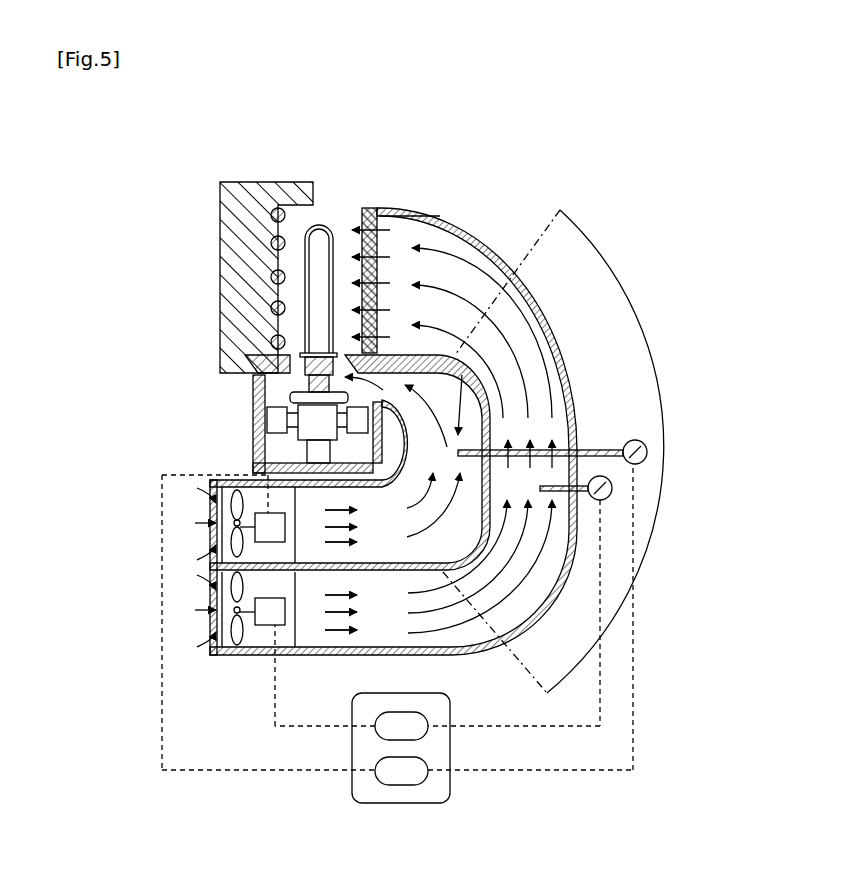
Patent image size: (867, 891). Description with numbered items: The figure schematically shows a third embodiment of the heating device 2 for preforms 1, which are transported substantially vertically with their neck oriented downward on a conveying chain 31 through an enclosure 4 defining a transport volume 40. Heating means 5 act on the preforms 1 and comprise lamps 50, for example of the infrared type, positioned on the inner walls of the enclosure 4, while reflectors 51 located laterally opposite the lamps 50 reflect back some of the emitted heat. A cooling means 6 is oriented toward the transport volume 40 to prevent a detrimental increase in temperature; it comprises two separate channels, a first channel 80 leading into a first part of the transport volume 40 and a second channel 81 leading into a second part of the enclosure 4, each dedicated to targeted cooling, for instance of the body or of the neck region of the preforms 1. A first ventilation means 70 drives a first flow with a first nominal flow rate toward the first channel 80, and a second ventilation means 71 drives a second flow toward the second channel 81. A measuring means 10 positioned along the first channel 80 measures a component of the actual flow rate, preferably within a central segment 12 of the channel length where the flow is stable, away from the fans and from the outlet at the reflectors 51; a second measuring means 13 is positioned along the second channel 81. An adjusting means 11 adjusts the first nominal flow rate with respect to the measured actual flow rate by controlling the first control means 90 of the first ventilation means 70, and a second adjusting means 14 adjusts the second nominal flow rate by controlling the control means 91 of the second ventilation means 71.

The preform 1 is at (306, 257).
The device 2 is at (492, 220).
The enclosure 4 is at (254, 428).
The heating means 5 is at (218, 180).
The cooling means 6 is at (222, 662).
The measuring means 10 is at (613, 489).
The adjusting means 11 is at (385, 728).
The central segment 12 is at (662, 436).
The second measuring means 13 is at (648, 457).
The second adjusting means 14 is at (385, 775).
The chain 31 is at (253, 397).
The transport volume 40 is at (340, 232).
The lamps 50 is at (290, 213).
The reflectors 51 is at (383, 243).
The first ventilation means 70 is at (237, 610).
The second ventilation means 71 is at (237, 527).
The first channel 80 is at (465, 360).
The second channel 81 is at (462, 360).
The first control means 90 is at (270, 627).
The control means 91 is at (265, 512).